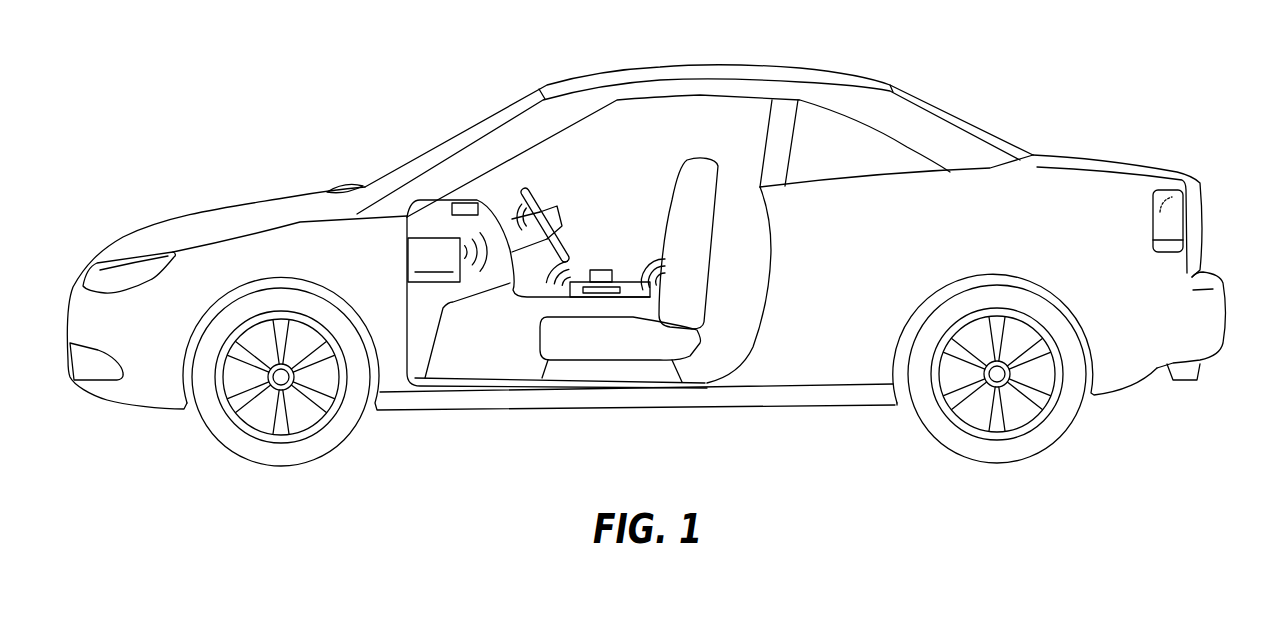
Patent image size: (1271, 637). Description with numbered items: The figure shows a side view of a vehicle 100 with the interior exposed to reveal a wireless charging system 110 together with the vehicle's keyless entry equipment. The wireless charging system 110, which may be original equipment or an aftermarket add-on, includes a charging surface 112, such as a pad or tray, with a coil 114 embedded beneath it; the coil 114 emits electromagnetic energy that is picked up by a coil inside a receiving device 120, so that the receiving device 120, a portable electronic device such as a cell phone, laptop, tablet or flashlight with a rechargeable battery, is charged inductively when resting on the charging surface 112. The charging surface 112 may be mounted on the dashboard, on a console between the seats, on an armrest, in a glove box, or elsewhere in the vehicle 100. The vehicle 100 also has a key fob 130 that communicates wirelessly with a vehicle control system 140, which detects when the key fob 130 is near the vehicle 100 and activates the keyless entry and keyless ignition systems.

The vehicle 100 is at (600, 82).
The wireless charging system 110 is at (463, 205).
The charging surface 112 is at (628, 280).
The coil 114 is at (620, 290).
The receiving device 120 is at (595, 270).
The key fob 130 is at (558, 218).
The vehicle control system 140 is at (447, 257).